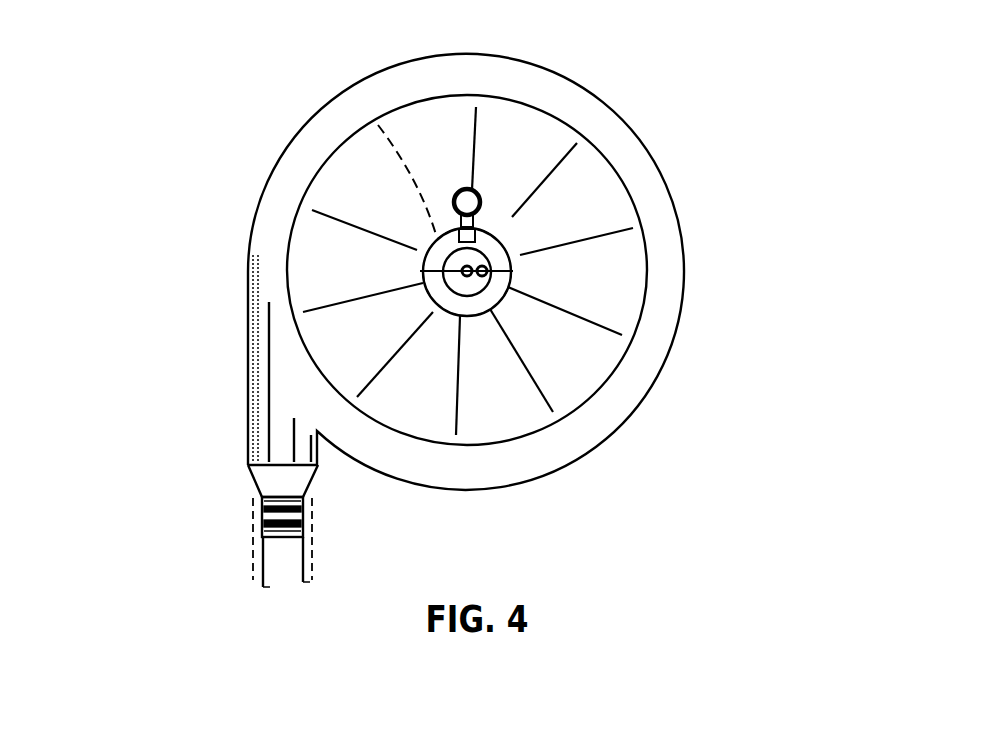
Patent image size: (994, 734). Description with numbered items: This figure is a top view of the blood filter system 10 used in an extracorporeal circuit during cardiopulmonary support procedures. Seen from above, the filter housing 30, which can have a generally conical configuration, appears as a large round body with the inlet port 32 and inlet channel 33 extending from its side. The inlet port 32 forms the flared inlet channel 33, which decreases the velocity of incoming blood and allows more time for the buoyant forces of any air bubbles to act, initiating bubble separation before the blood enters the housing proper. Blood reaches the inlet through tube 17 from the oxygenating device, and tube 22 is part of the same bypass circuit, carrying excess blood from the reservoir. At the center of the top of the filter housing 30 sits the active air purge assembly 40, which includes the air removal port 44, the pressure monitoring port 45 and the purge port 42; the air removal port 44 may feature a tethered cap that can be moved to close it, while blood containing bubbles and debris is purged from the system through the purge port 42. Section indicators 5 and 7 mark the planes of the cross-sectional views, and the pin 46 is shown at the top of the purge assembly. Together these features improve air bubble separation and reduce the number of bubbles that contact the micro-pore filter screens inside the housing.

The blood filter system 10 is at (212, 80).
The section line 5- 5 is at (215, 288).
The section line 7- 7 is at (467, 22).
The filter housing 30 is at (625, 392).
The inlet channel 33 is at (247, 368).
The inlet port 32 is at (282, 537).
The tube 17 is at (313, 560).
The tube 22 is at (286, 584).
The active air purge assembly 40 is at (437, 238).
The purge port 42 is at (503, 223).
The air removal port 44 is at (423, 262).
The pressure monitoring port 45 is at (513, 288).
The pin 46 is at (461, 188).